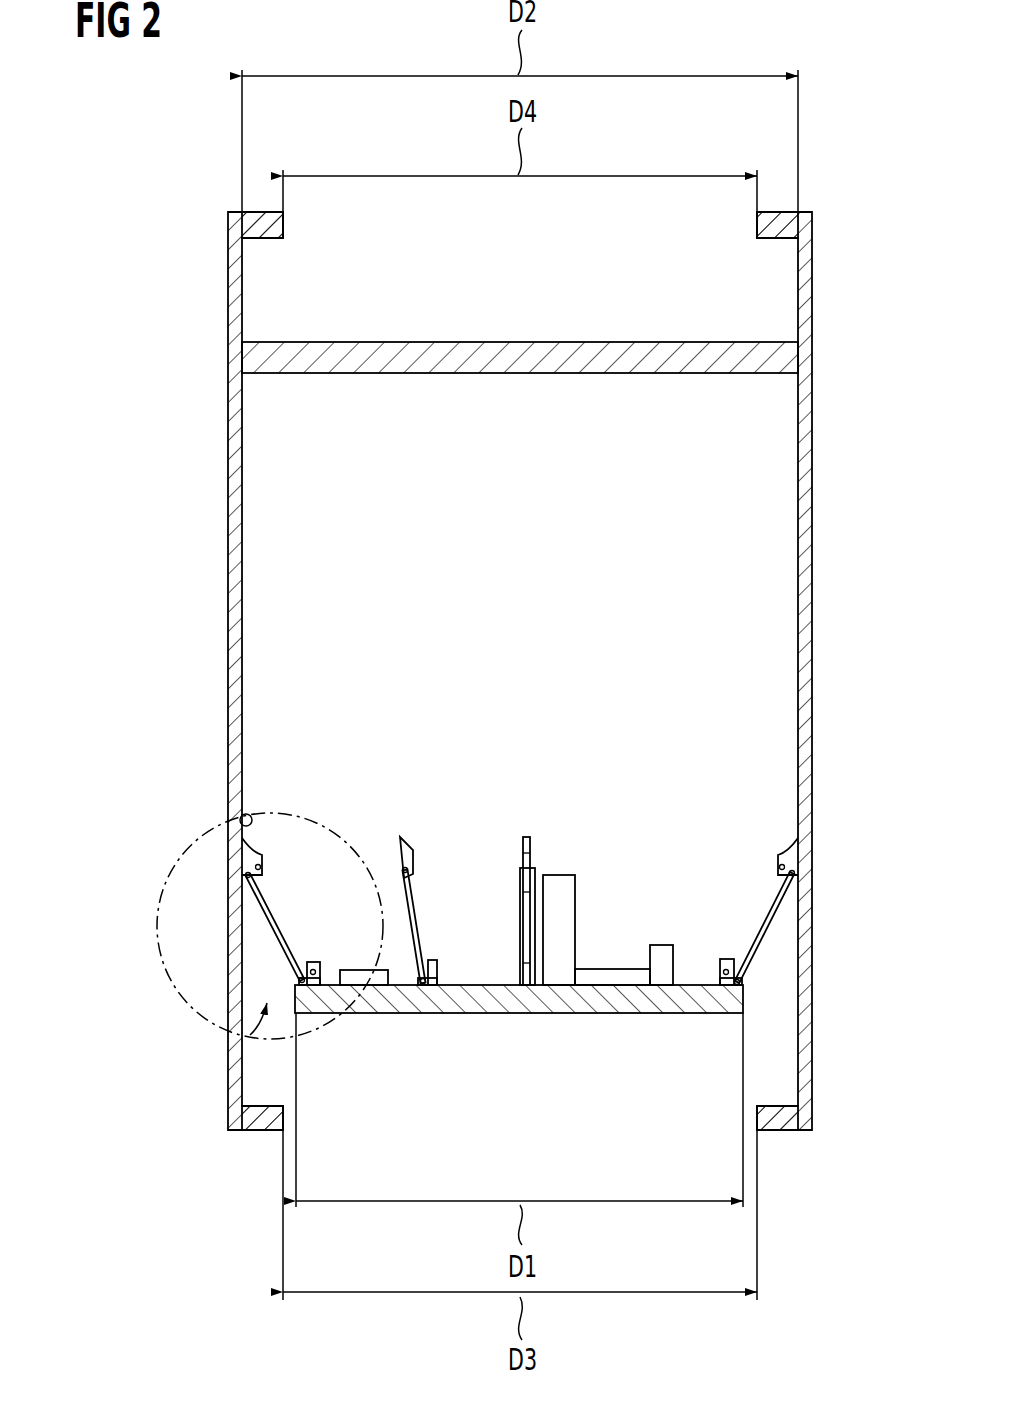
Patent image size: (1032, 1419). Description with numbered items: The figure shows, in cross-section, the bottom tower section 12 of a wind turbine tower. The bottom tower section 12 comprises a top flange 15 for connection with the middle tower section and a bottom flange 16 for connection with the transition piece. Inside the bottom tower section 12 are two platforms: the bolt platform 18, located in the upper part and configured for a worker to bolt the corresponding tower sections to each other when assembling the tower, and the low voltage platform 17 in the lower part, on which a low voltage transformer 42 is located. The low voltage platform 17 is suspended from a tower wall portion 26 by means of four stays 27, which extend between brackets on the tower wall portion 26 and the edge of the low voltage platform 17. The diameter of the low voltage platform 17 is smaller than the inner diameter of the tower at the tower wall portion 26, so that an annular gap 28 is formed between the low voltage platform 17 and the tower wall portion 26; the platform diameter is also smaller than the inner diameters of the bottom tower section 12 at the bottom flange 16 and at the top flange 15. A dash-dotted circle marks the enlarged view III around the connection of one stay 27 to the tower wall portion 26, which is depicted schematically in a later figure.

The bottom tower section 12 is at (822, 188).
The top flange 15 is at (257, 222).
The bottom flange 16 is at (258, 1118).
The low voltage platform 17 is at (735, 993).
The bolt platform 18 is at (780, 358).
The tower wall portion 26 is at (235, 815).
The stays 27 is at (272, 947).
The annular gap 28 is at (250, 1035).
The low voltage transformer 42 is at (560, 948).
The enlarged view III is at (157, 928).